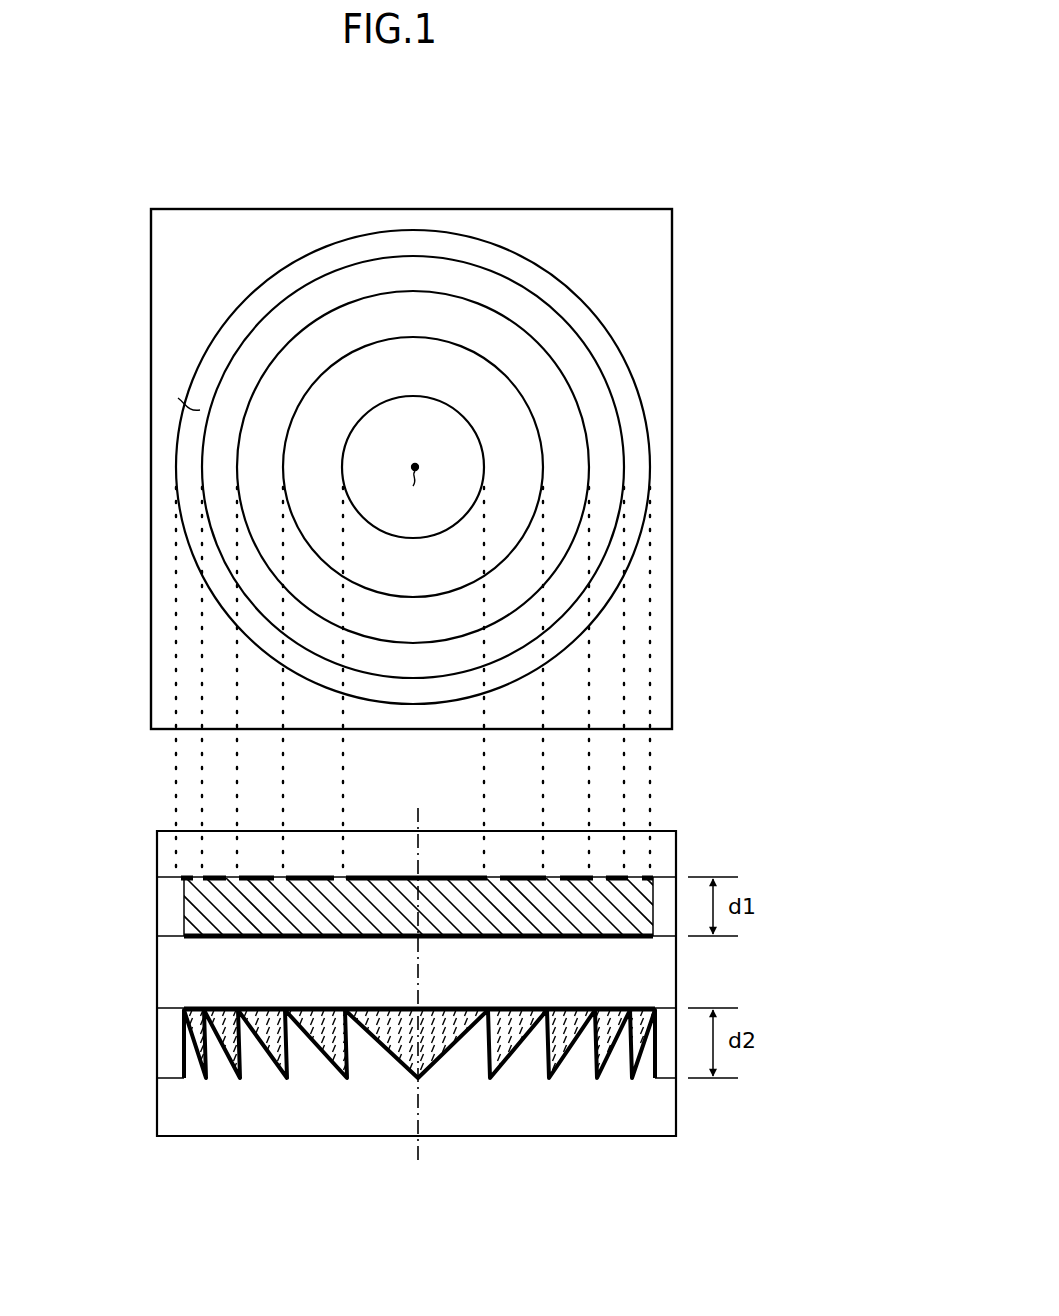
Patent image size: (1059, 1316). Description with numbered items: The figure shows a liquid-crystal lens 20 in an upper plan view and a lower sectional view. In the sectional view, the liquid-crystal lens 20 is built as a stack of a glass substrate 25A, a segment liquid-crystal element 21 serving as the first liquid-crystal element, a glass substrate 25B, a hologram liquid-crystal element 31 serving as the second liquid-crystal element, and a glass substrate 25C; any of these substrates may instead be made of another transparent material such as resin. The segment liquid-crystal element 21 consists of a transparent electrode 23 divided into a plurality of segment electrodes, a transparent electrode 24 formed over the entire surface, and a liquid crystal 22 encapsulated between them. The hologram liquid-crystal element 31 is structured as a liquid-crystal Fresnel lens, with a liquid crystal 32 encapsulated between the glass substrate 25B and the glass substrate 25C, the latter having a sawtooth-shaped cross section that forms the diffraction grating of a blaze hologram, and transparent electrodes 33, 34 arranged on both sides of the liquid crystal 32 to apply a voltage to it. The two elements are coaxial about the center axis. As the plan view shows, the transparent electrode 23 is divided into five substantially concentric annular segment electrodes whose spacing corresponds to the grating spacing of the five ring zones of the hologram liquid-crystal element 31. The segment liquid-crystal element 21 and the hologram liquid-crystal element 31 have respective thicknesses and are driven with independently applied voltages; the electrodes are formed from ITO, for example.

The liquid-crystal lens 20 is at (672, 255).
The segment liquid-crystal element 21 is at (136, 882).
The liquid crystal 22 is at (461, 913).
The transparent electrode 23 is at (525, 877).
The transparent electrode 24 is at (581, 939).
The glass substrate 25A is at (656, 852).
The glass substrate 25B is at (653, 972).
The glass substrate 25C is at (656, 1113).
The hologram liquid-crystal element 31 is at (136, 1010).
The liquid crystal 32 is at (388, 1007).
The transparent electrode 33 is at (527, 1008).
The transparent electrode 34 is at (508, 1062).